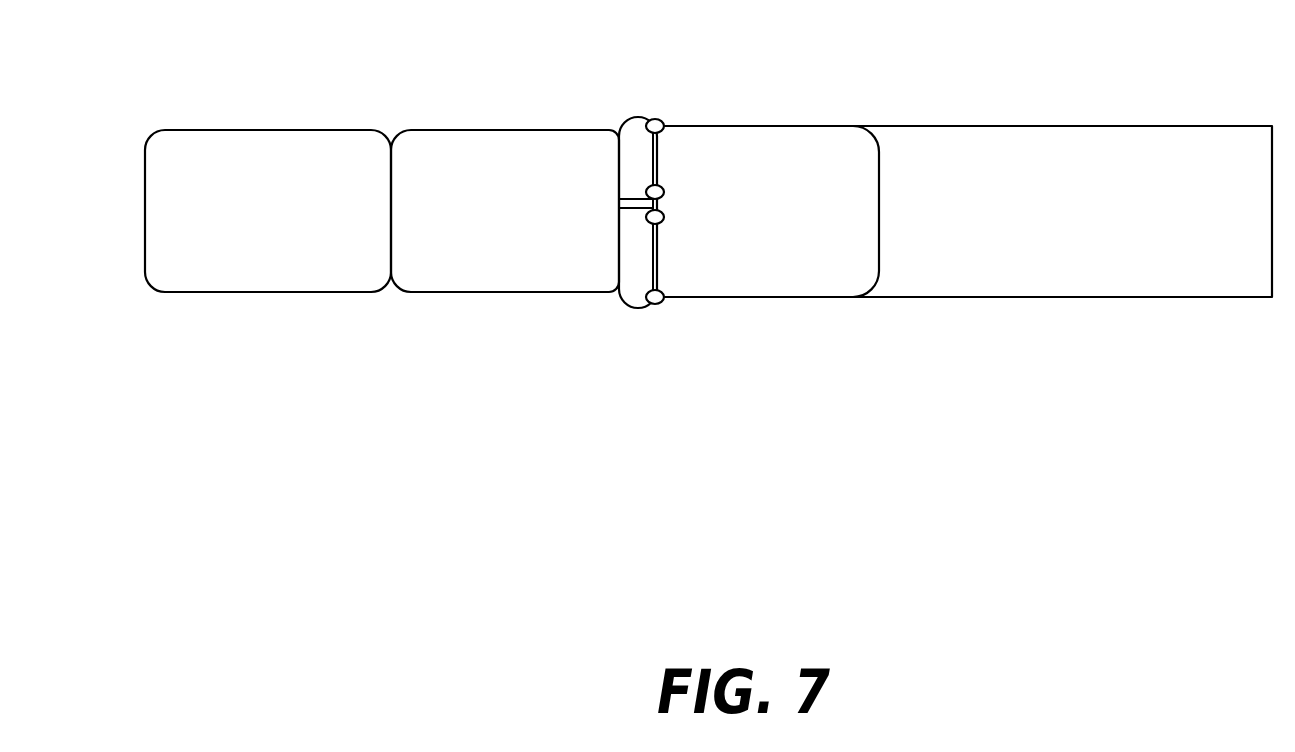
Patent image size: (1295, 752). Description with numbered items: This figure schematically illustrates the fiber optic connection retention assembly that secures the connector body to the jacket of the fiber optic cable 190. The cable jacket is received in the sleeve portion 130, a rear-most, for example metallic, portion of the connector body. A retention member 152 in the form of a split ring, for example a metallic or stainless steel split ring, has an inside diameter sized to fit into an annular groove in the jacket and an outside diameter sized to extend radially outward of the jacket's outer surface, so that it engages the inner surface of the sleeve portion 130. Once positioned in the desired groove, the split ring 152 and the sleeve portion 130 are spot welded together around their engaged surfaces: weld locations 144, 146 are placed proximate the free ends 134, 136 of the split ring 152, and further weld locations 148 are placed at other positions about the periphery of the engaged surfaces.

The sleeve portion 130 is at (976, 310).
The free end 134 is at (625, 172).
The free end 136 is at (633, 221).
The spot weld location 144 is at (665, 182).
The spot weld location 146 is at (668, 207).
The other spot weld locations 148 is at (668, 116).
The retention member 152 is at (616, 118).
The fiber optic cable 190 is at (145, 243).